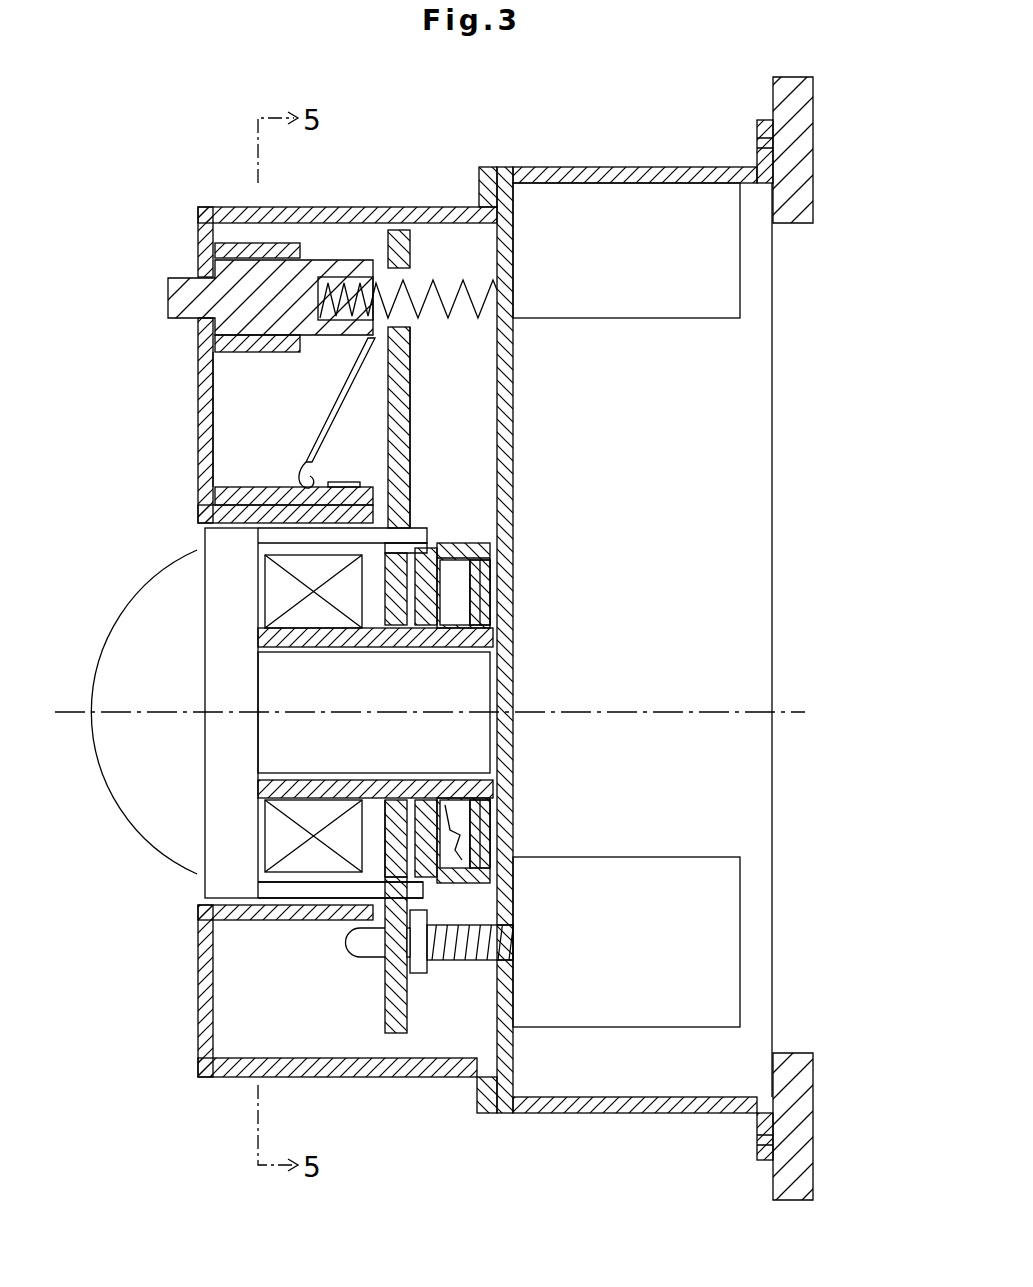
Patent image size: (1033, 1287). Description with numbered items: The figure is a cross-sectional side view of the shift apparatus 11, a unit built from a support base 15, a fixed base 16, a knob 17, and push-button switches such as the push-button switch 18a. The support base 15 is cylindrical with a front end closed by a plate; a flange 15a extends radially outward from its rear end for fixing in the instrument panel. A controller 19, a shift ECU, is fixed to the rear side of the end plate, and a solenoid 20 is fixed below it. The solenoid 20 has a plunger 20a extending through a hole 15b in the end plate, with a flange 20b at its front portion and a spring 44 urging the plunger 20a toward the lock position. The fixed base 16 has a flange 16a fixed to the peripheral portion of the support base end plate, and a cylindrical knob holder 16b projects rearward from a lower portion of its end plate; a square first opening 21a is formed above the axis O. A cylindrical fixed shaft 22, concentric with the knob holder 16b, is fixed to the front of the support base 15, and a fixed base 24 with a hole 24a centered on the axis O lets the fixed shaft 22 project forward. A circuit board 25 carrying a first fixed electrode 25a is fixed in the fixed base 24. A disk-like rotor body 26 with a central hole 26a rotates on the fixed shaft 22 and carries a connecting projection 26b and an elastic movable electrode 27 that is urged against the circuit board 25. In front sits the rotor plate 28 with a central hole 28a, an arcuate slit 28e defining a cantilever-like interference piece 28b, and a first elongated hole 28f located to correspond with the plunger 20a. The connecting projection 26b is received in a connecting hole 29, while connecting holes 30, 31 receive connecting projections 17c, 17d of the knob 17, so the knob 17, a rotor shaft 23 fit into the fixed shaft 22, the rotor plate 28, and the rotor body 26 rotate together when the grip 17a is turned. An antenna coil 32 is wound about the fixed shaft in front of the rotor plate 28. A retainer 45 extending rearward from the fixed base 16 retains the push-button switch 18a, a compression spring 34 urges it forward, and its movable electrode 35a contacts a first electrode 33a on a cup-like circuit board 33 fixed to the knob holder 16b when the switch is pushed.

The shift apparatus 11 is at (153, 133).
The support base 15 is at (613, 167).
The flange 15a is at (757, 128).
The hole 15b is at (500, 935).
The fixed base 16 is at (357, 207).
The flange 16a is at (479, 185).
The knob holder 16b is at (205, 530).
The knob 17 is at (215, 580).
The grip 17a is at (125, 635).
The connecting projection 17c is at (280, 497).
The connecting projection 17d is at (277, 905).
The push-button switch 18a is at (245, 419).
The controller 19 is at (662, 305).
The solenoid 20 is at (670, 857).
The plunger 20a is at (355, 948).
The flange 20b is at (420, 975).
The first opening 21a is at (197, 318).
The fixed shaft 22 is at (497, 635).
The rotor shaft 23 is at (485, 697).
The fixed base 24 is at (497, 552).
The hole 24a is at (497, 792).
The circuit board 25 is at (490, 592).
The first fixed electrode 25a is at (490, 835).
The rotor body 26 is at (455, 618).
The hole 26a is at (425, 625).
The connecting projection 26b is at (460, 552).
The movable electrode 27 is at (455, 870).
The rotor plate 28 is at (412, 403).
The hole 28a is at (400, 812).
The interference piece 28b is at (388, 242).
The slit 28e is at (412, 282).
The first elongated hole 28f is at (385, 960).
The connecting hole 29 is at (388, 625).
The connecting hole 30 is at (405, 530).
The connecting hole 31 is at (333, 900).
The antenna coil 32 is at (310, 625).
The circuit board 33 is at (245, 500).
The first electrode 33a is at (345, 485).
The compression spring 34 is at (450, 322).
The movable electrode 35a is at (352, 362).
The spring 44 is at (465, 962).
The retainer 45 is at (215, 347).
The axis O is at (449, 712).